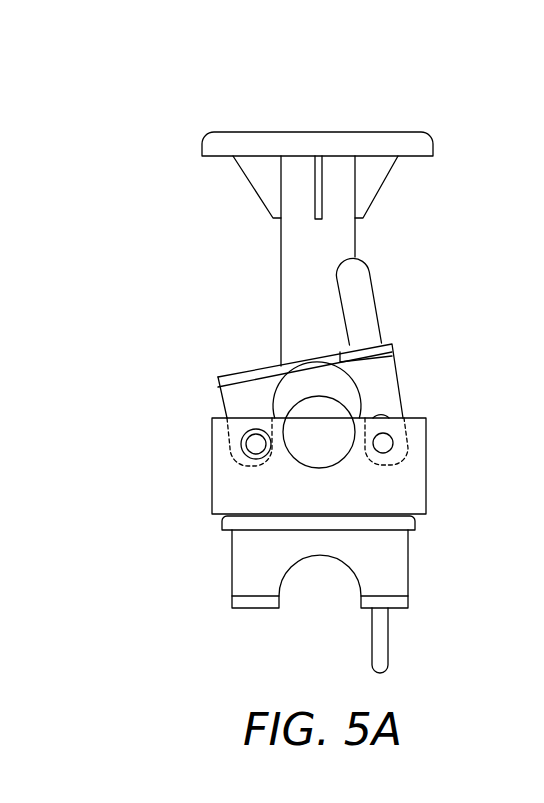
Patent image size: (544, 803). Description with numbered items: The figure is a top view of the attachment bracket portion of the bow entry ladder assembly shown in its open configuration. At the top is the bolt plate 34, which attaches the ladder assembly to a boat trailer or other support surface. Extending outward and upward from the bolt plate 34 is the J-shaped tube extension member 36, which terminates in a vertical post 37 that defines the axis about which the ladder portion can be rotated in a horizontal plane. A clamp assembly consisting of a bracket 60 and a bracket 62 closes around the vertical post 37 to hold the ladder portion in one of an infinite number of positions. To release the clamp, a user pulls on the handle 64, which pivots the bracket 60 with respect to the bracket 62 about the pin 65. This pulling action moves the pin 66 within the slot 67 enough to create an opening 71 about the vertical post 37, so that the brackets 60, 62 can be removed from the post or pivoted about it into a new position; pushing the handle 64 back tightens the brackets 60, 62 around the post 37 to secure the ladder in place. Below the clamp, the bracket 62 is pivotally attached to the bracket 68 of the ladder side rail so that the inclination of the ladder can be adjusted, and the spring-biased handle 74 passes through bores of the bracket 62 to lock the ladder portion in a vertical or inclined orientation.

The bolt plate 34 is at (377, 132).
The J-shaped tube extension member 36 is at (281, 268).
The vertical post 37 is at (329, 443).
The bracket 60 is at (377, 380).
The bracket 62 is at (412, 488).
The handle 64 is at (363, 295).
The pin 65 is at (255, 444).
The pin 66 is at (383, 443).
The slot 67 is at (390, 417).
The bracket 68 is at (392, 548).
The opening 71 is at (310, 387).
The spring-biased handle 74 is at (380, 637).